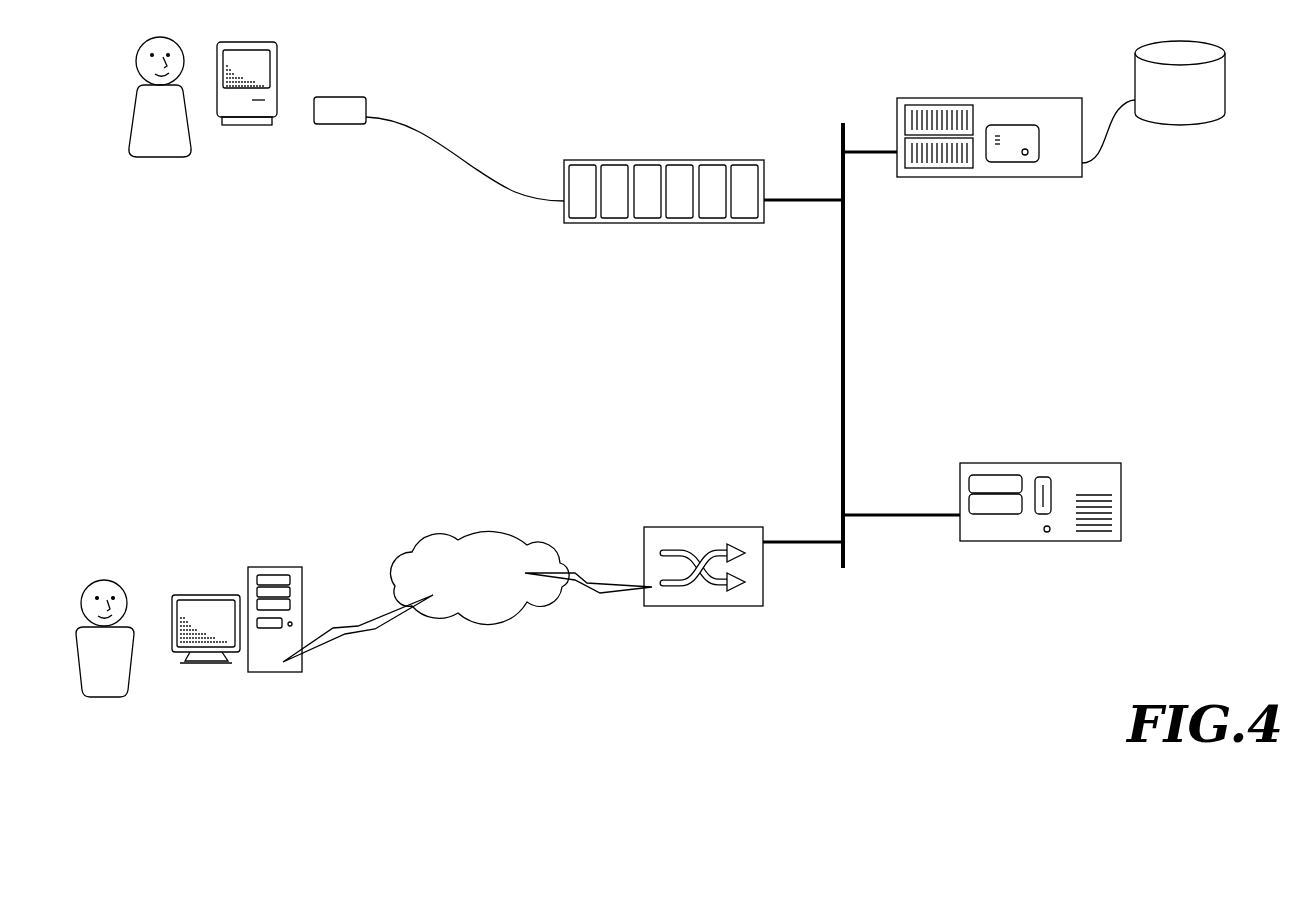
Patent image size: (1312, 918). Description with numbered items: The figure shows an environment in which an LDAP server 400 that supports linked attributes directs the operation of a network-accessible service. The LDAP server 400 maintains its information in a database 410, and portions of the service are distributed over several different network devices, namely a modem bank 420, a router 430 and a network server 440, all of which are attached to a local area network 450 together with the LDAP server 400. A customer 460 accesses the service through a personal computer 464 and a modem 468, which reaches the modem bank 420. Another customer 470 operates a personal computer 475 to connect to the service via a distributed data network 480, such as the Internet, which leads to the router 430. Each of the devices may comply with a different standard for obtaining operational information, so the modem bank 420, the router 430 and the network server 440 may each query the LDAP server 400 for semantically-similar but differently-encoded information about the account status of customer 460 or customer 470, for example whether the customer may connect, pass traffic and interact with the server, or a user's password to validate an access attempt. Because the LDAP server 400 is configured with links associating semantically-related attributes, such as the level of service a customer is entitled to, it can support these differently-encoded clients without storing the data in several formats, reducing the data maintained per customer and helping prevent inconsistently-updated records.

The LDAP server 400 is at (1073, 178).
The database 410 is at (1218, 113).
The modem bank 420 is at (578, 224).
The router 430 is at (738, 608).
The network server 440 is at (1113, 542).
The local area network 450 is at (842, 362).
The customer 460 is at (138, 90).
The personal computer 464 is at (277, 50).
The modem 468 is at (354, 97).
The customer 470 is at (114, 581).
The personal computer 475 is at (257, 566).
The distributed data network 480 is at (470, 570).